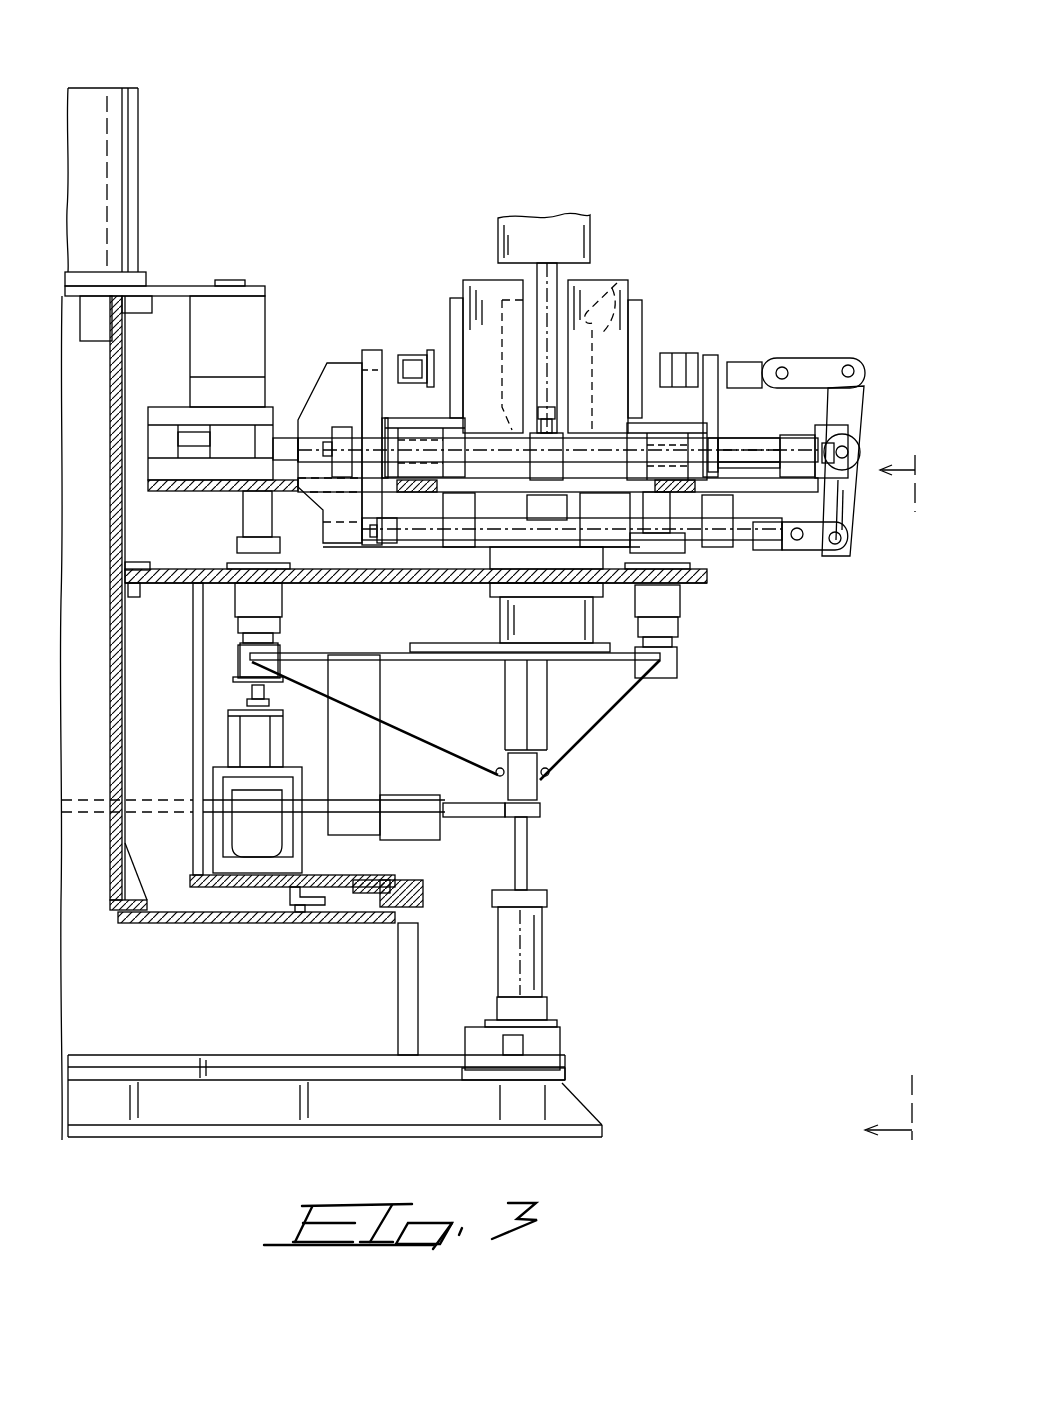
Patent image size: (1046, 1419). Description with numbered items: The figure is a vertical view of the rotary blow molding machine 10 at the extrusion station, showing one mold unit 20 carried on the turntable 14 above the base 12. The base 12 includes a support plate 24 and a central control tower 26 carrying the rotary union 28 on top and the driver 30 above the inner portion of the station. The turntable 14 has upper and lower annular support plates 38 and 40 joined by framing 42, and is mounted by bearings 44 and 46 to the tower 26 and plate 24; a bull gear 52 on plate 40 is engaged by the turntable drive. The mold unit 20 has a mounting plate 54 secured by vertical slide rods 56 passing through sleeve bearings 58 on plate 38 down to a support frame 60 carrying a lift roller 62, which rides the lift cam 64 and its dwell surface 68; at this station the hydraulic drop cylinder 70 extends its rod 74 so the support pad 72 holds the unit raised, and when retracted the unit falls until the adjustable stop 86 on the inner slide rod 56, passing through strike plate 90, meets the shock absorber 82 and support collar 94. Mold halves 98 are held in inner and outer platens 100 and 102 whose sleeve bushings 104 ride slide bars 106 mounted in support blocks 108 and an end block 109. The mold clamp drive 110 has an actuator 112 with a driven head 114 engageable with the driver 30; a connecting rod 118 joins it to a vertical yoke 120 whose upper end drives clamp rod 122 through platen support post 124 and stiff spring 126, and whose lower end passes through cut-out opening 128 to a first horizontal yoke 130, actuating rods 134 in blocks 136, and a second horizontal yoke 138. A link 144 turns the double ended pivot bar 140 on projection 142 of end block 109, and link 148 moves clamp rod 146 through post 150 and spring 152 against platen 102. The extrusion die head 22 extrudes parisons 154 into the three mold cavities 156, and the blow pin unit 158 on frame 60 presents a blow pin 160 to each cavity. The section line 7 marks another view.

The rotary blow molding machine 10 is at (106, 38).
The base 12 is at (232, 1140).
The turntable 14 is at (700, 586).
The mold unit 20 is at (650, 330).
The extrusion die head 22 is at (514, 222).
The support plate 24 is at (180, 925).
The central control tower 26 is at (112, 560).
The rotary union 28 is at (112, 88).
The driver 30 is at (258, 313).
The upper annular support plate 38 is at (340, 575).
The lower annular support plate 40 is at (195, 880).
The framing 42 is at (432, 785).
The bearing 44 is at (145, 560).
The bearing 46 is at (300, 912).
The circumferential bull gear 52 is at (395, 908).
The mounting plate 54 is at (225, 490).
The vertical slide rod 56 is at (243, 520).
The sleeve bearing 58 is at (280, 600).
The support frame 60 is at (605, 722).
The lift roller 62 is at (512, 760).
The lift cam 64 is at (486, 820).
The dwell surface 68 is at (400, 830).
The hydraulic drop cylinder 70 is at (530, 965).
The support pad 72 is at (540, 808).
The cylinder rod 74 is at (530, 862).
The shock absorber 82 is at (248, 840).
The adjustable stop 86 is at (270, 700).
The strike plate 90 is at (236, 683).
The support collar 94 is at (250, 748).
The mold half 98 is at (470, 280).
The inner platen 100 is at (456, 298).
The outer platen 102 is at (645, 312).
The sleeve bushing 104 is at (418, 450).
The slide bar 106 is at (740, 443).
The support block 108 is at (342, 427).
The end block 109 is at (798, 435).
The mold clamp drive 110 is at (308, 415).
The actuator 112 is at (195, 440).
The driven head 114 is at (200, 400).
The connecting rod 118 is at (284, 450).
The vertical yoke 120 is at (321, 385).
The clamp rod 122 is at (382, 350).
The platen support post 124 is at (384, 418).
The stiff spring 126 is at (425, 342).
The cut-out opening 128 is at (310, 490).
The first horizontal yoke 130 is at (385, 548).
The actuating rod 134 is at (505, 528).
The block 136 is at (455, 550).
The second horizontal yoke 138 is at (770, 552).
The double ended pivot bar 140 is at (863, 410).
The projection 142 is at (848, 448).
The link 144 is at (812, 552).
The clamp rod 146 is at (735, 362).
The link 148 is at (835, 366).
The platen support post 150 is at (712, 357).
The stiff spring 152 is at (672, 355).
The resin parison 154 is at (552, 270).
The mold cavity 156 is at (612, 292).
The blow pin unit 158 is at (578, 618).
The blow pin 160 is at (548, 412).
The section line 7 is at (902, 798).